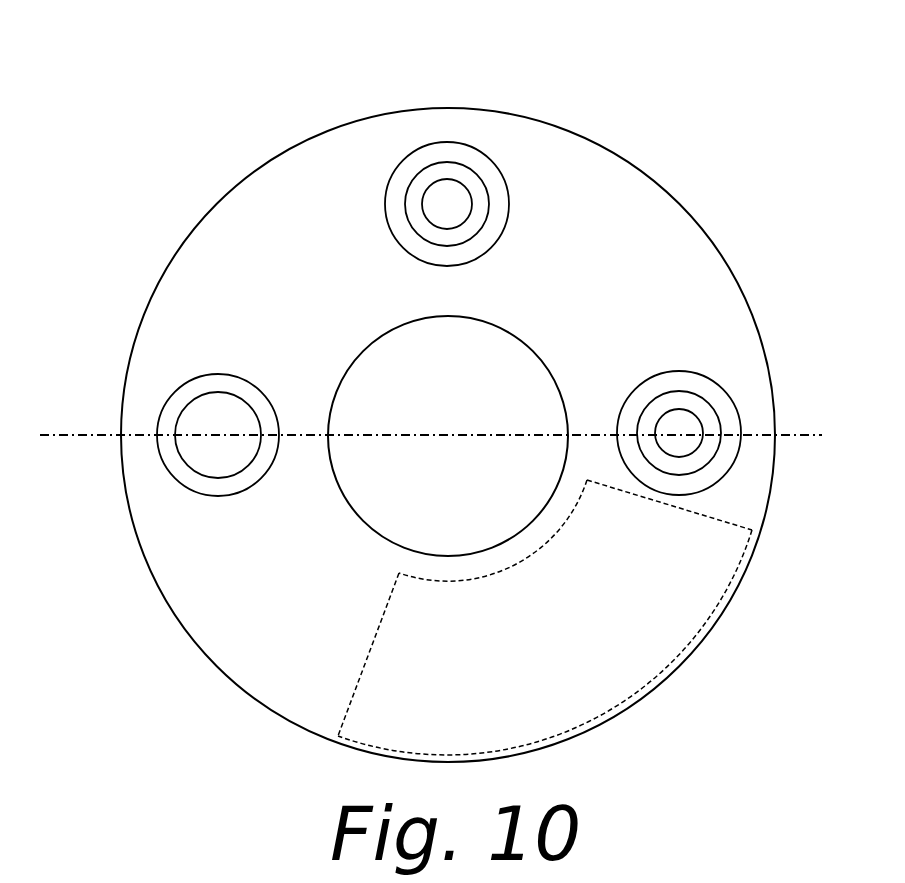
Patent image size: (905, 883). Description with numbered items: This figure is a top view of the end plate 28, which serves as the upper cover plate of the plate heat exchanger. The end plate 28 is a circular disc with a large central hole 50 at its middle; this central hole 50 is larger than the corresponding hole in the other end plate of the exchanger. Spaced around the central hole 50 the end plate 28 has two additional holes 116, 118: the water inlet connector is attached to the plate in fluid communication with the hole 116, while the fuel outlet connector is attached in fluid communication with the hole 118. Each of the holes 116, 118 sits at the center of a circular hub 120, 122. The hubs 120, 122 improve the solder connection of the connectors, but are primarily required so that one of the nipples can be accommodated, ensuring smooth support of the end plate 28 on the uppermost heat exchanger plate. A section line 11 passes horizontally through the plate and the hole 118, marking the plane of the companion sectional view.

The mounting disc / plate 28 is at (160, 638).
The central opening 50 is at (458, 474).
The bore of first boss 116 is at (444, 204).
The first boss counterbore ring 120 is at (476, 214).
The bore of second boss 118 is at (670, 427).
The second boss counterbore ring 122 is at (705, 415).
The section line 11- 11 is at (61, 435).